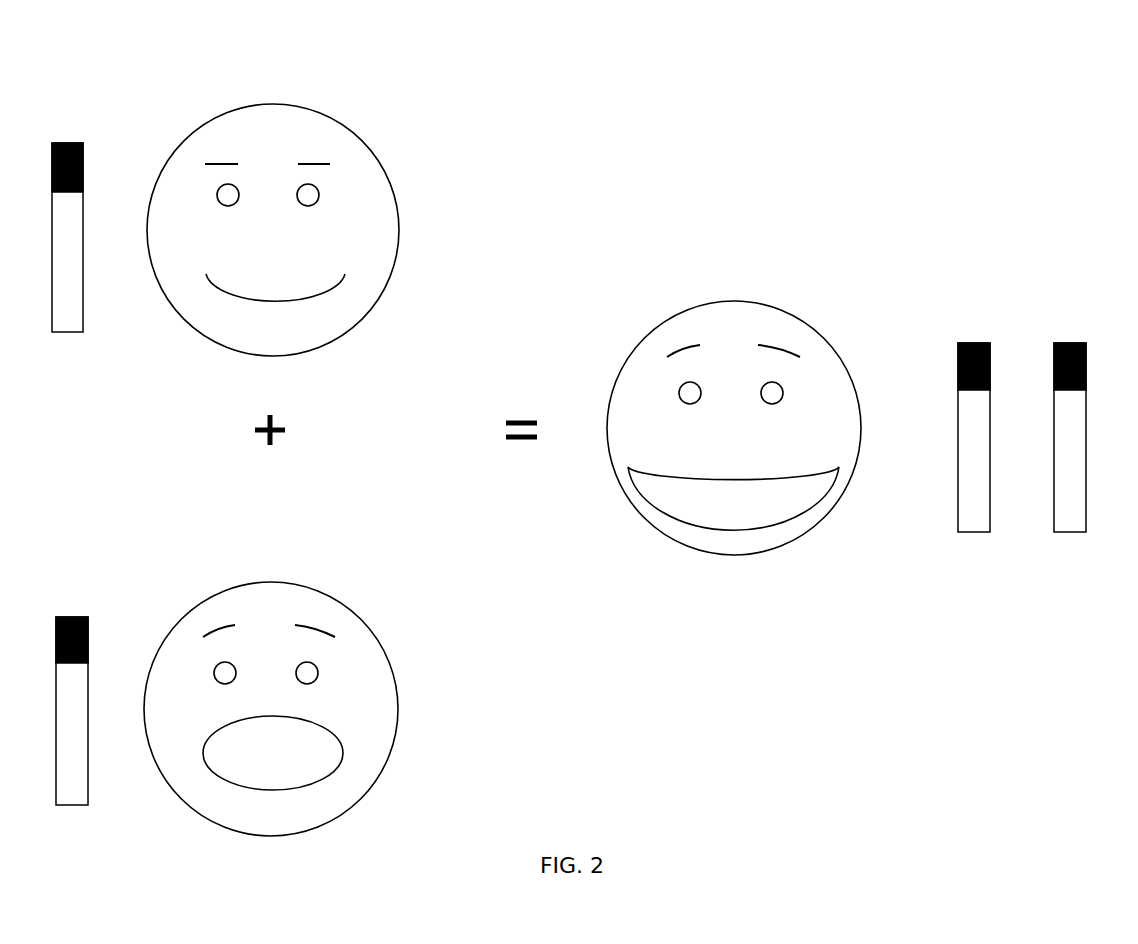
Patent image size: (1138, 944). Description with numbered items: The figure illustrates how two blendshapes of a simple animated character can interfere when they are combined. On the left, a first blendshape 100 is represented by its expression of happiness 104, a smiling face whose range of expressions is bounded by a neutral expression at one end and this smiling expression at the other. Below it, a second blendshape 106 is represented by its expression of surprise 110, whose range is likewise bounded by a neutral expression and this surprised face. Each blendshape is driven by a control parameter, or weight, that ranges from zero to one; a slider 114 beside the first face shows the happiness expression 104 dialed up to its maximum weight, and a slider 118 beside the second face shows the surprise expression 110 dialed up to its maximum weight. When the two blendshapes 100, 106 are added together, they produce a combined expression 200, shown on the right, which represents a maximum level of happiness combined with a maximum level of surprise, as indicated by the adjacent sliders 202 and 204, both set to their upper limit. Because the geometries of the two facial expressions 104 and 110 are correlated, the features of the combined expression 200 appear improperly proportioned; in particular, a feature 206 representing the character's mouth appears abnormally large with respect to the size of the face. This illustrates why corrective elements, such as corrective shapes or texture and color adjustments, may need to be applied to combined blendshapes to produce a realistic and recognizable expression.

The blendshape 100 is at (145, 105).
The expression of happiness 104 is at (397, 200).
The second blendshape 106 is at (393, 575).
The expression of surprise 110 is at (392, 665).
The slider 114 is at (85, 371).
The slider 118 is at (53, 849).
The expression 200 is at (857, 395).
The slider 202 is at (991, 577).
The slider 204 is at (1087, 577).
The feature 206 is at (830, 492).